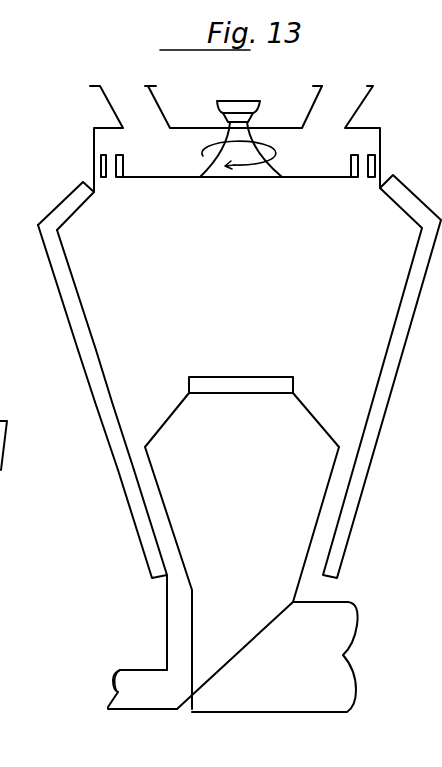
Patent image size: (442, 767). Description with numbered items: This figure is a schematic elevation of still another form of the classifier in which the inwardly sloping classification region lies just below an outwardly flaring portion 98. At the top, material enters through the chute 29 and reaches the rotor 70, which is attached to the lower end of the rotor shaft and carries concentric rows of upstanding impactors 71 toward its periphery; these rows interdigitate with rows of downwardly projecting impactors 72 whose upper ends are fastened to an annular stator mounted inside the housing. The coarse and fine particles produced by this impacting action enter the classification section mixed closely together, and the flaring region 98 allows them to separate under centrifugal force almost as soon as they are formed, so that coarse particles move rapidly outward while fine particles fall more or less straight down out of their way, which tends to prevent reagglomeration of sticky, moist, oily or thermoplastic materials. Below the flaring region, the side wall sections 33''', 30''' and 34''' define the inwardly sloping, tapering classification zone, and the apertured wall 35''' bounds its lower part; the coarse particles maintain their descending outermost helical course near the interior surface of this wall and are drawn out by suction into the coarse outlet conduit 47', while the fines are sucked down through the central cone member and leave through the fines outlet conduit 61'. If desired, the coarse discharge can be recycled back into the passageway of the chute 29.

The chute 29 is at (101, 94).
The rotor 70 is at (318, 177).
The upstanding impactors 71 is at (118, 154).
The downwardly projecting impactors 72 is at (101, 165).
The outwardly flaring portion 98 is at (118, 223).
The side wall 33''' is at (52, 287).
The wall section 30''' is at (74, 376).
The lower wall section 34''' is at (95, 436).
The apertured wall 35''' is at (127, 570).
The coarse outlet conduit 47' is at (118, 689).
The fines outlet conduit 61' is at (293, 657).